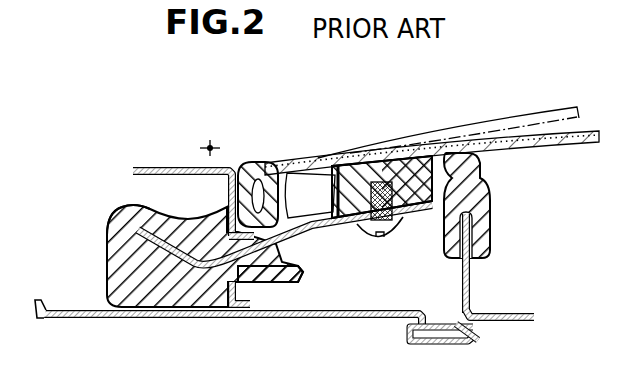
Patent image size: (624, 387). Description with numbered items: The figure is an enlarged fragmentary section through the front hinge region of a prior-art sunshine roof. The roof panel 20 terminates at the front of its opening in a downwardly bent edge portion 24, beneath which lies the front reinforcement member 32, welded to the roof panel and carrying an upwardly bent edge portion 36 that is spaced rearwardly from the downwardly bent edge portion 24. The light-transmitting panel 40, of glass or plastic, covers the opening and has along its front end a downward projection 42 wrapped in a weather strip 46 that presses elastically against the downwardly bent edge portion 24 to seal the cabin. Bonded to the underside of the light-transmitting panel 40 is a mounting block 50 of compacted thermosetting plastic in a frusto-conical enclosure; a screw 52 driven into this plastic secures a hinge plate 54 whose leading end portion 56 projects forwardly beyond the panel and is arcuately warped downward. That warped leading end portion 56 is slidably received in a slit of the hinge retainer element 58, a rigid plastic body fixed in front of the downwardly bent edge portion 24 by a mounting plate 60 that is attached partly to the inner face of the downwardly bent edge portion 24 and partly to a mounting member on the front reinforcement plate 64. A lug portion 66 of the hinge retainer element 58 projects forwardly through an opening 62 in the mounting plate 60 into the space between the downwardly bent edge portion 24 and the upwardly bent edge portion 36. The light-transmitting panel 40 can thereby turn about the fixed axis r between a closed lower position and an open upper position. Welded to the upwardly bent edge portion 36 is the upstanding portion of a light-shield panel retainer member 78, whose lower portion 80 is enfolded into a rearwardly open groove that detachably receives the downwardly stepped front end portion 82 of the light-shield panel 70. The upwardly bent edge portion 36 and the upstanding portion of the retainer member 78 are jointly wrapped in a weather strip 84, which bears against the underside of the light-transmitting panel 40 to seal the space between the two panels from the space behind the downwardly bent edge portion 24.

The roof panel 20 is at (185, 176).
The downwardly bent edge portion 24 is at (231, 170).
The fixed axis r is at (205, 147).
The weather strip 46 is at (257, 163).
The mounting block 50 is at (437, 198).
The light-transmitting panel 40 is at (579, 143).
The hinge retainer element 58 is at (114, 207).
The mounting plate 60 is at (226, 222).
The downward projection 42 is at (310, 195).
The weather strip 84 is at (483, 172).
The leading end portion 56 is at (196, 242).
The hinge plate 54 is at (326, 231).
The screw 52 is at (402, 240).
The light-shield panel retainer member 78 is at (473, 271).
The lug portion 66 is at (278, 280).
The upwardly bent edge portion 36 is at (497, 265).
The light-shield panel 70 is at (524, 311).
The front reinforcement member 32 is at (97, 321).
The opening 62 is at (224, 284).
The front reinforcement plate 64 is at (228, 337).
The lower portion 80 is at (430, 350).
The downwardly stepped front end portion 82 is at (476, 331).